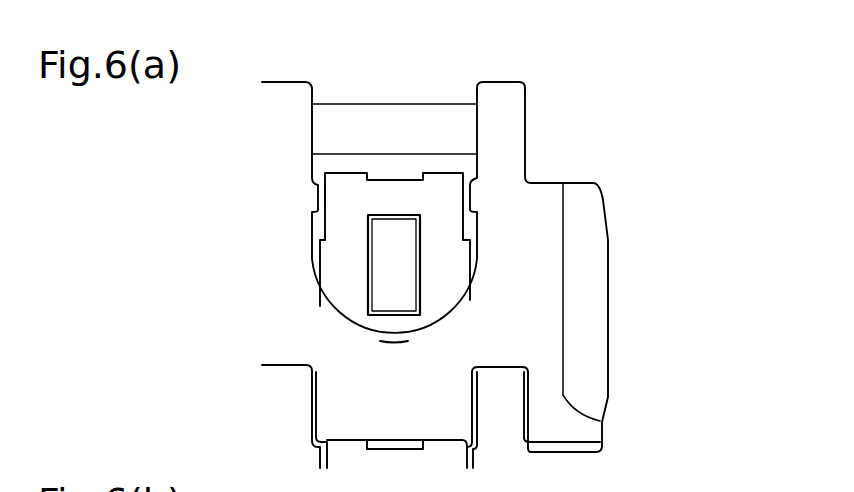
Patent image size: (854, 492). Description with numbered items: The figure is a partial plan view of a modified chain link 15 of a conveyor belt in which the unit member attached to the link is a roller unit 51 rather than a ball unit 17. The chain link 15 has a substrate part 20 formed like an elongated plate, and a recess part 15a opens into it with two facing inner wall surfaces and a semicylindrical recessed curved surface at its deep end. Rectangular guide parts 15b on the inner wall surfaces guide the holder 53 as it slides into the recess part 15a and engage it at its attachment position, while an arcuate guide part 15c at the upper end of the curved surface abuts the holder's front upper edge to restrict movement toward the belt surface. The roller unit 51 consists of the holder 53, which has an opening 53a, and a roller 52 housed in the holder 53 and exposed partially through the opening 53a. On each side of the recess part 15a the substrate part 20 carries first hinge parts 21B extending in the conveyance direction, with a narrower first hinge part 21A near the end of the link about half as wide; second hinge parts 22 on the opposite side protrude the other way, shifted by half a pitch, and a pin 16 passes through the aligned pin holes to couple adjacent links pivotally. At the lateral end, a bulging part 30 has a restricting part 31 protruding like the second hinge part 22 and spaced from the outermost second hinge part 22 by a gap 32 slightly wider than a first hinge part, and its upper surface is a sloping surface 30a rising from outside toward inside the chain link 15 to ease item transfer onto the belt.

The chain link 15 is at (609, 244).
The recess part 15a is at (358, 336).
The guide part 15b is at (323, 193).
The guide part 15c is at (415, 336).
The pin 16 is at (394, 116).
The ball unit 17 is at (349, 451).
The substrate part 20 is at (460, 342).
The first hinge part 21A is at (498, 92).
The first hinge part 21B is at (278, 94).
The second hinge part 22 is at (440, 433).
The bulging part 30 is at (597, 277).
The sloping surface 30a is at (597, 310).
The restricting part 31 is at (563, 435).
The gap 32 is at (523, 412).
The roller unit 51 is at (388, 344).
The roller 52 is at (390, 255).
The holder 53 is at (340, 218).
The opening 53a is at (410, 267).